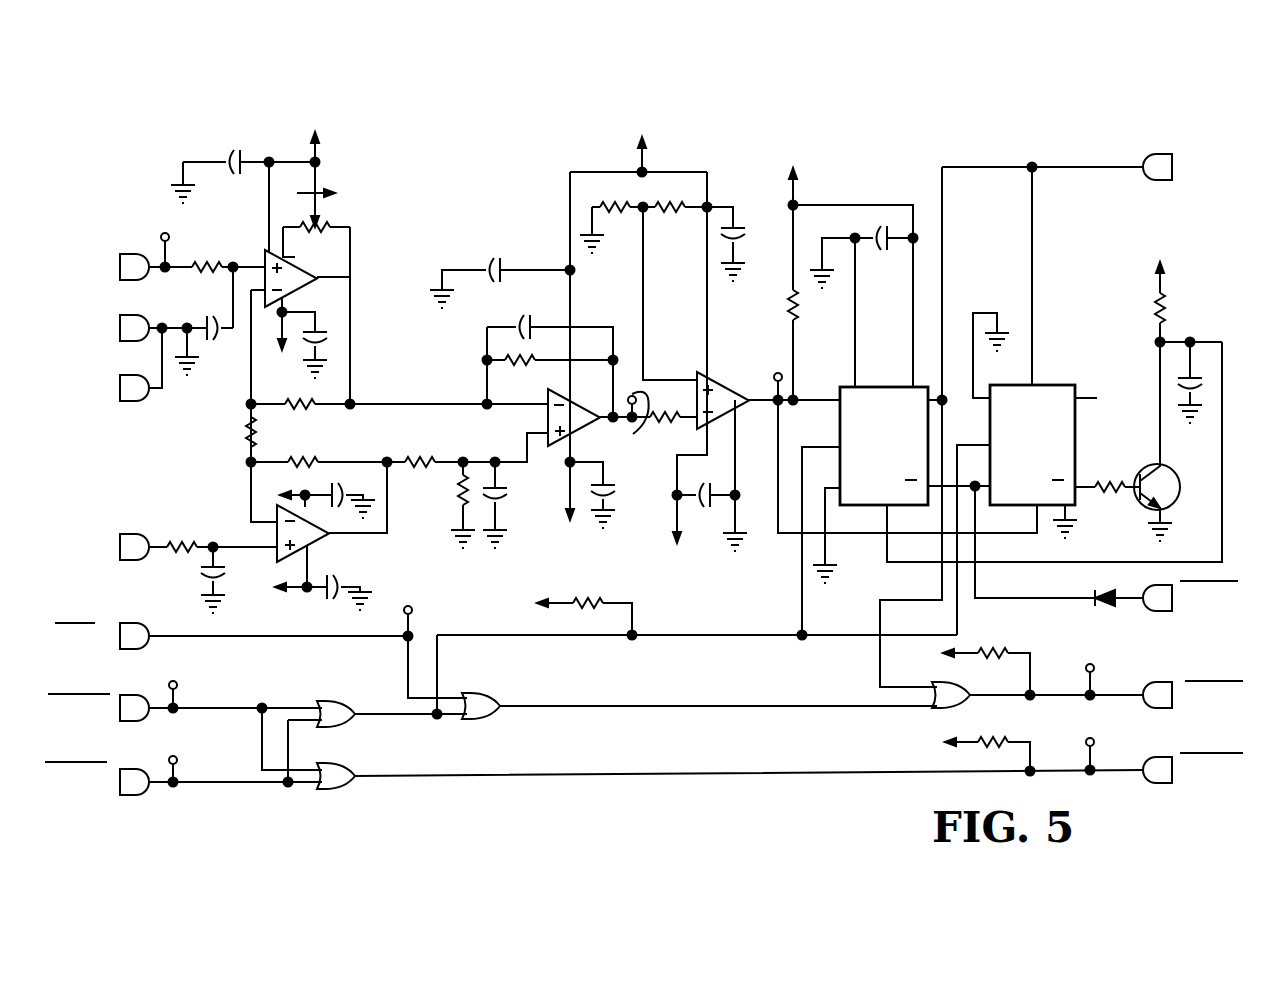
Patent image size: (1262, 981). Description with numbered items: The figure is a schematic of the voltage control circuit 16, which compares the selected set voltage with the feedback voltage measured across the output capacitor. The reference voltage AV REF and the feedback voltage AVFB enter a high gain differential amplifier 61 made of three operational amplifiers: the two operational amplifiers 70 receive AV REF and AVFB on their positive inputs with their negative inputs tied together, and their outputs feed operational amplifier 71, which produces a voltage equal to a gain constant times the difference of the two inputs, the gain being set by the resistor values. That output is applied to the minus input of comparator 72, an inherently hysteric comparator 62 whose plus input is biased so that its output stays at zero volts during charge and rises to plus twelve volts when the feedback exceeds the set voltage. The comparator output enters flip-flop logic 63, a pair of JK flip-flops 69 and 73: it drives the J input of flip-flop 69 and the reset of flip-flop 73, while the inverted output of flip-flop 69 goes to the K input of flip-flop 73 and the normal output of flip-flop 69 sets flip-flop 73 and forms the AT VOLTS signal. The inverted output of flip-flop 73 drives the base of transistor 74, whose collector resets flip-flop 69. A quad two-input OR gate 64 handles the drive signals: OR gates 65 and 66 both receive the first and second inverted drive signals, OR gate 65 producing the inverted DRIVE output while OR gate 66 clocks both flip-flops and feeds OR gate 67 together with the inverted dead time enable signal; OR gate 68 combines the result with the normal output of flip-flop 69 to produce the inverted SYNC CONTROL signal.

The voltage control circuit 16 is at (641, 465).
The high gain differential amplifier 61 is at (348, 356).
The inherently hysteric comparator 62 is at (635, 341).
The flip-flop logic 63 is at (998, 395).
The quad two-input OR gate 64 is at (646, 707).
The OR gate 65 is at (357, 781).
The OR gate 66 is at (357, 717).
The OR gate 67 is at (500, 709).
The OR gate 68 is at (971, 699).
The JK flip-flop 69 is at (870, 387).
The operational amplifier 70 is at (343, 548).
The operational amplifier 71 is at (548, 409).
The comparator 72 is at (722, 382).
The JK flip-flop 73 is at (1050, 385).
The transistor 74 is at (1157, 464).